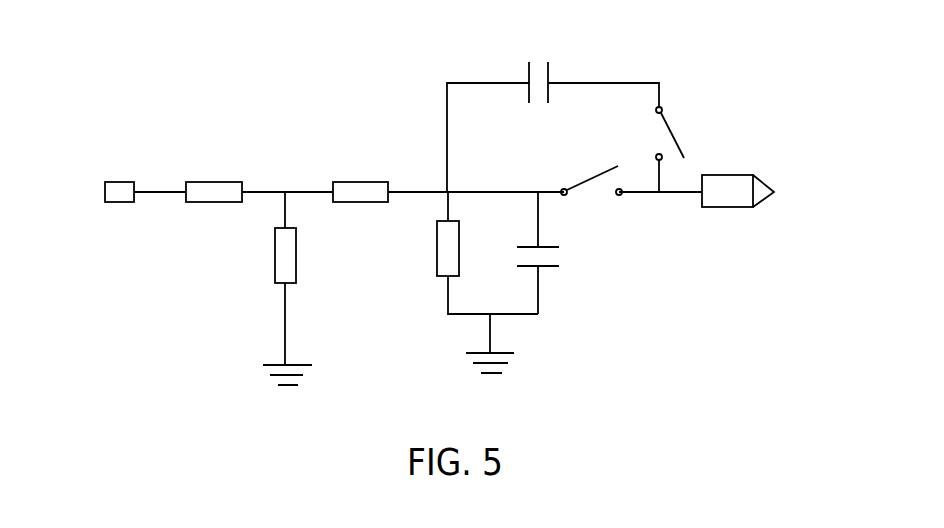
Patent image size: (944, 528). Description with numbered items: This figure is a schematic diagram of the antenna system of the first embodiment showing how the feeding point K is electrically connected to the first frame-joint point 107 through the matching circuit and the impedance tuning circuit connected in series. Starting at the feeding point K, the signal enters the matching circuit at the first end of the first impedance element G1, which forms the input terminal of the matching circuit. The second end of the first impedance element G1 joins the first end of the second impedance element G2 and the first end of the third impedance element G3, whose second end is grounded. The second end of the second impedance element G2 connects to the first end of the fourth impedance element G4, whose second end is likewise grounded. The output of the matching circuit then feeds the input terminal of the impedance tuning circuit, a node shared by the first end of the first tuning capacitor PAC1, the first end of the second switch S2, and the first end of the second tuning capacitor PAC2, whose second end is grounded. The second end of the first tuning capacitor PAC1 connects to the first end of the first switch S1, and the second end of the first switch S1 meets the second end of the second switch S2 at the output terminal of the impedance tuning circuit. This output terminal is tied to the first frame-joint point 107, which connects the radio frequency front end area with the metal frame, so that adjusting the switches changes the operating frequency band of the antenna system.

The feeding point K is at (119, 177).
The first impedance element G1 is at (214, 172).
The second impedance element G2 is at (360, 171).
The third impedance element G3 is at (301, 288).
The fourth impedance element G4 is at (463, 253).
The first tuning capacitor PAC1 is at (553, 107).
The second tuning capacitor PAC2 is at (582, 253).
The first switch S1 is at (684, 149).
The second switch S2 is at (591, 166).
The first frame-joint point 107 is at (733, 190).